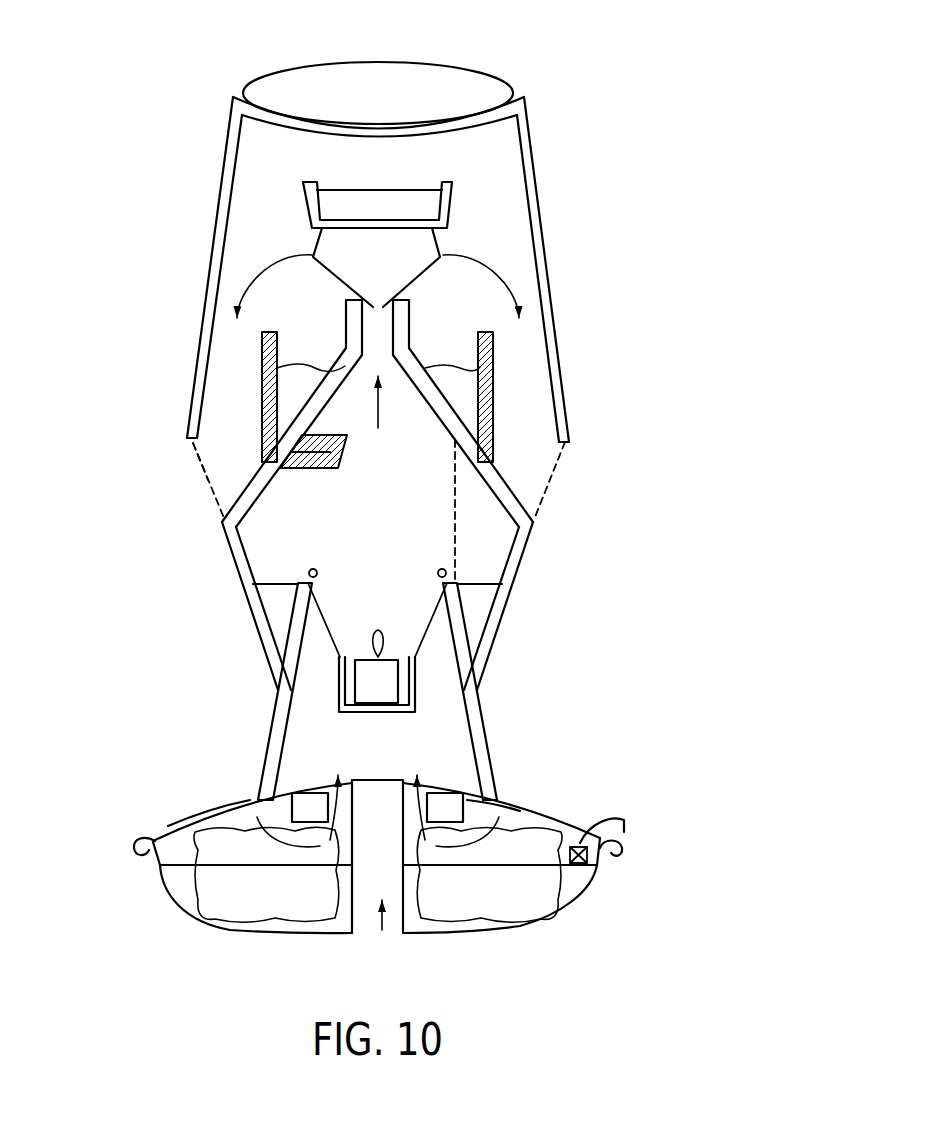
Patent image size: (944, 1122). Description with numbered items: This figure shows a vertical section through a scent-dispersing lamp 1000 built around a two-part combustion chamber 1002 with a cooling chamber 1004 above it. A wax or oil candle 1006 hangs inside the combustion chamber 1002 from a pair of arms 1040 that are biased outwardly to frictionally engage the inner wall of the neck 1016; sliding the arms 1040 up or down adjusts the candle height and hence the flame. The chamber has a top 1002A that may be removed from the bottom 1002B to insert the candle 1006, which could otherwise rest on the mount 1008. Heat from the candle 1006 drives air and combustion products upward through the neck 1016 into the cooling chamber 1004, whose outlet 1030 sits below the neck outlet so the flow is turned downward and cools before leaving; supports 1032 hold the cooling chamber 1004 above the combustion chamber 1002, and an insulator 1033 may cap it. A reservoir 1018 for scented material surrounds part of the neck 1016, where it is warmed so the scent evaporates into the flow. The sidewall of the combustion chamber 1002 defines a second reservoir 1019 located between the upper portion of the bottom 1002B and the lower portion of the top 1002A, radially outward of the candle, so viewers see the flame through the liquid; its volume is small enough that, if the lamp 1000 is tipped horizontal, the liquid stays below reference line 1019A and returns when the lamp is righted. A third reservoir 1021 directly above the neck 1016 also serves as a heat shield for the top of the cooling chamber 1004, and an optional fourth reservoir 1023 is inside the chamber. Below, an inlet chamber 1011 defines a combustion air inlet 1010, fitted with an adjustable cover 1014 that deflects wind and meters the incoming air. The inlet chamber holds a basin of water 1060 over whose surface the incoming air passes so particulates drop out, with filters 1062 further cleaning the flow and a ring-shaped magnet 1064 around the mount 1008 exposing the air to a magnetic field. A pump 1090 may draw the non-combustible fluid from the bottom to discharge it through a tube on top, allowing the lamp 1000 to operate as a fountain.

The lamp 1000 is at (706, 176).
The cooling chamber 1004 is at (556, 283).
The insulator 1033 is at (413, 72).
The third reservoir 1021 is at (393, 200).
The neck 1016 is at (402, 320).
The combustion chamber 1002 is at (364, 547).
The top 1002A is at (300, 410).
The bottom 1002B is at (270, 737).
The second reservoir 1019 is at (268, 613).
The reference line 1019A is at (455, 482).
The reservoir 1018 is at (281, 397).
The fourth reservoir 1023 is at (310, 450).
The outlet 1030 is at (213, 455).
The supports 1032 is at (217, 500).
The arms 1040 is at (316, 569).
The candle 1006 is at (392, 687).
The ring-shaped magnet 1064 is at (310, 800).
The mount 1008 is at (382, 930).
The water 1060 is at (358, 834).
The combustion air inlet 1010 is at (210, 830).
The adjustable cover 1014 is at (208, 838).
The inlet chamber 1011 is at (158, 883).
The filters 1062 is at (543, 840).
The pump 1090 is at (587, 857).